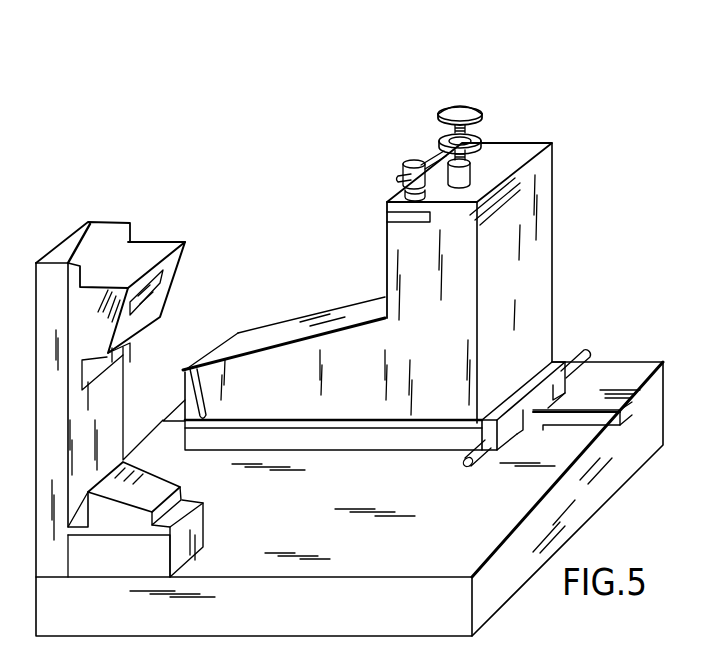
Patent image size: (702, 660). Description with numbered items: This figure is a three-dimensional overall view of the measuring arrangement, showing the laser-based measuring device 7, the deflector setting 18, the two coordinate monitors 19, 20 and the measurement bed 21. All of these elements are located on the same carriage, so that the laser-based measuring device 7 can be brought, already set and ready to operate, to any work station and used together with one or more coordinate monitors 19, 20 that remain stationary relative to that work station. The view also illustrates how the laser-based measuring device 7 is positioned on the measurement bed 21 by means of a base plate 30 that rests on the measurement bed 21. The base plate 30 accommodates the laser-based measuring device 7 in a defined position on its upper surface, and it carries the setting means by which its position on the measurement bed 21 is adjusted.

The laser-based measuring device 7 is at (345, 288).
The deflector setting 18 is at (465, 93).
The coordinate monitor 19 is at (185, 242).
The coordinate monitor 20 is at (175, 488).
The measurement bed 21 is at (437, 490).
The base plate 30 is at (395, 445).